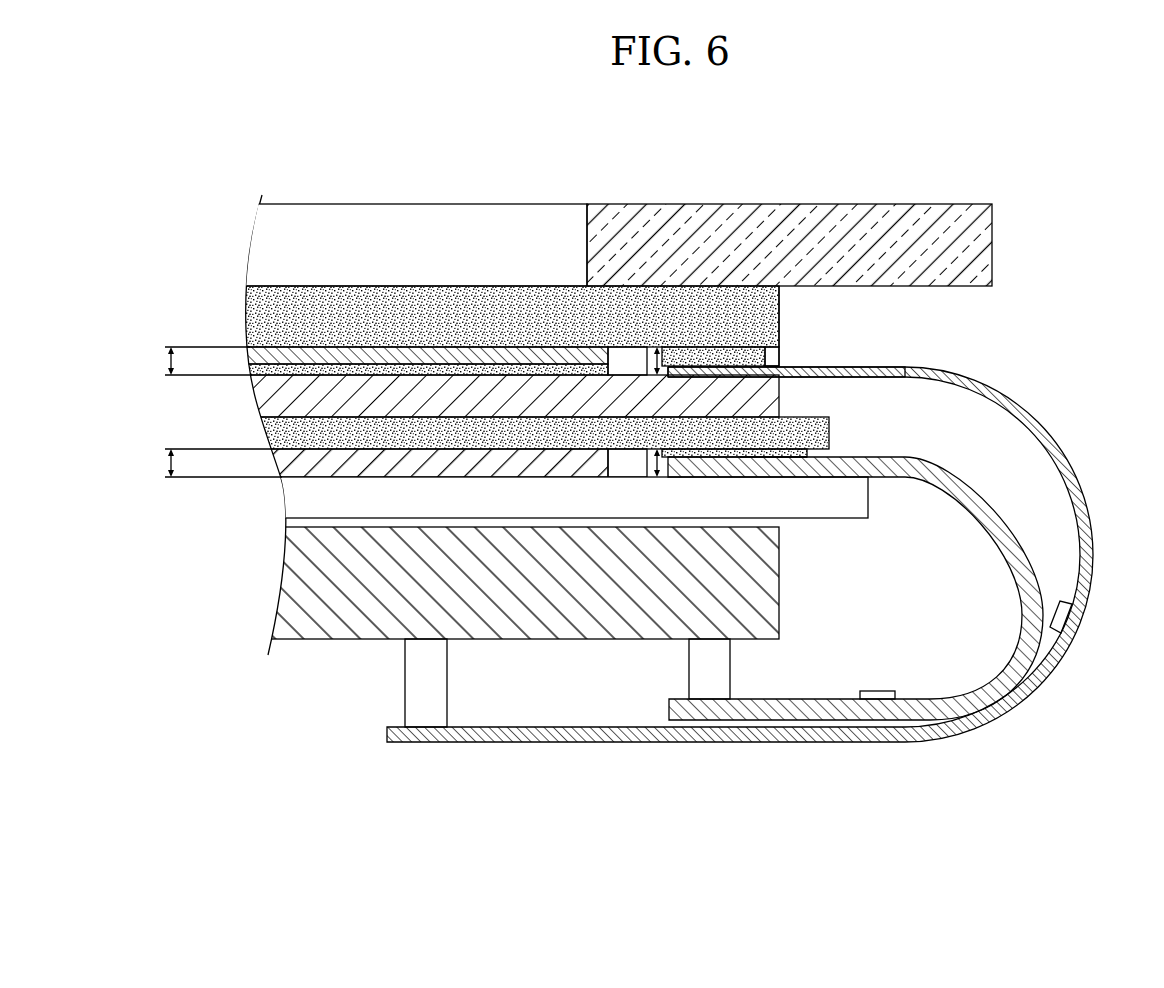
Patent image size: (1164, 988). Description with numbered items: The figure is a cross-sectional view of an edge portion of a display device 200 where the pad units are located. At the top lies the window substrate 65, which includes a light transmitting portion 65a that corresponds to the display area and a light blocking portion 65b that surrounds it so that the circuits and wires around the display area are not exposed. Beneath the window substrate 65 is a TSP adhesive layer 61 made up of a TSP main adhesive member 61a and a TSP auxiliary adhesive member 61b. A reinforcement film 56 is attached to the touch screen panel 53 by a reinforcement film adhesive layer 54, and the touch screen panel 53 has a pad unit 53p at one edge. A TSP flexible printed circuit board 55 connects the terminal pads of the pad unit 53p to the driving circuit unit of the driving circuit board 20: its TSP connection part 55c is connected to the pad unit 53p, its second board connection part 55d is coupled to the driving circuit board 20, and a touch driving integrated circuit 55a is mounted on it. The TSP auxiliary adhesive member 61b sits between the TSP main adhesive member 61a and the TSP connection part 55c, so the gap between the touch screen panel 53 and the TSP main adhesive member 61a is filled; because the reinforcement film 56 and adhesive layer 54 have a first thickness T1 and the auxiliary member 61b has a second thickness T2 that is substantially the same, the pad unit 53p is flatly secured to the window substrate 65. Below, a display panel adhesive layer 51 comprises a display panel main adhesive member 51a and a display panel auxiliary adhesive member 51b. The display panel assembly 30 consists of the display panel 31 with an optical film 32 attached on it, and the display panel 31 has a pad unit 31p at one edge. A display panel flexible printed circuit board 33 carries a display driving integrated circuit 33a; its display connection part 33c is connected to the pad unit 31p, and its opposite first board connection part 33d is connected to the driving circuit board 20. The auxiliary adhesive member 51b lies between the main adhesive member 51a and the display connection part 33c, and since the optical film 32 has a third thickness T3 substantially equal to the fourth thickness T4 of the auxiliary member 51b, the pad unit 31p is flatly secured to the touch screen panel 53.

The display device 200 is at (939, 161).
The driving circuit board 20 is at (312, 577).
The display panel assembly 30 is at (231, 486).
The display panel 31 is at (302, 500).
The optical film 32 is at (283, 479).
The pad unit 31p is at (993, 512).
The display panel flexible printed circuit board 33 is at (1023, 583).
The display driving integrated circuit 33a is at (880, 691).
The display connection part 33c is at (737, 458).
The first board connection part 33d is at (780, 715).
The display panel adhesive layer 51 is at (1040, 330).
The display panel main adhesive member 51a is at (517, 432).
The display panel auxiliary adhesive member 51b is at (803, 453).
The touch screen panel 53 is at (280, 402).
The pad unit 53p is at (768, 361).
The reinforcement film adhesive layer 54 is at (255, 371).
The TSP flexible printed circuit board 55 is at (1088, 558).
The touch driving integrated circuit 55a is at (1062, 614).
The TSP connection part 55c is at (745, 335).
The second board connection part 55d is at (387, 735).
The reinforcement film 56 is at (273, 358).
The TSP adhesive layer 61 is at (773, 148).
The TSP main adhesive member 61a is at (583, 312).
The TSP auxiliary adhesive member 61b is at (722, 363).
The window substrate 65 is at (627, 163).
The light transmitting portion 65a is at (545, 232).
The light blocking portion 65b is at (628, 232).
The first thickness T1 is at (399, 361).
The second thickness T2 is at (647, 362).
The third thickness T3 is at (399, 464).
The fourth thickness T4 is at (647, 465).